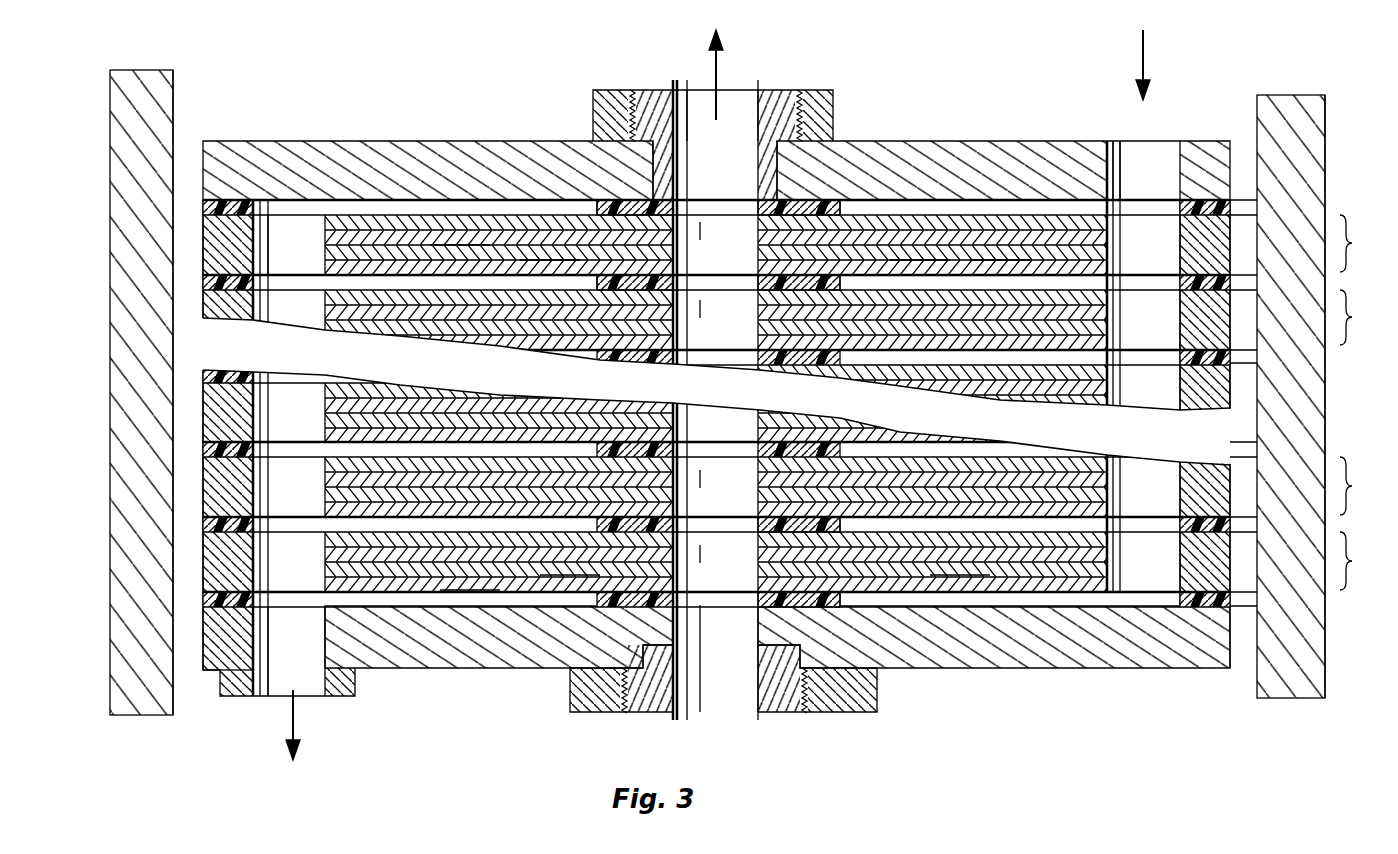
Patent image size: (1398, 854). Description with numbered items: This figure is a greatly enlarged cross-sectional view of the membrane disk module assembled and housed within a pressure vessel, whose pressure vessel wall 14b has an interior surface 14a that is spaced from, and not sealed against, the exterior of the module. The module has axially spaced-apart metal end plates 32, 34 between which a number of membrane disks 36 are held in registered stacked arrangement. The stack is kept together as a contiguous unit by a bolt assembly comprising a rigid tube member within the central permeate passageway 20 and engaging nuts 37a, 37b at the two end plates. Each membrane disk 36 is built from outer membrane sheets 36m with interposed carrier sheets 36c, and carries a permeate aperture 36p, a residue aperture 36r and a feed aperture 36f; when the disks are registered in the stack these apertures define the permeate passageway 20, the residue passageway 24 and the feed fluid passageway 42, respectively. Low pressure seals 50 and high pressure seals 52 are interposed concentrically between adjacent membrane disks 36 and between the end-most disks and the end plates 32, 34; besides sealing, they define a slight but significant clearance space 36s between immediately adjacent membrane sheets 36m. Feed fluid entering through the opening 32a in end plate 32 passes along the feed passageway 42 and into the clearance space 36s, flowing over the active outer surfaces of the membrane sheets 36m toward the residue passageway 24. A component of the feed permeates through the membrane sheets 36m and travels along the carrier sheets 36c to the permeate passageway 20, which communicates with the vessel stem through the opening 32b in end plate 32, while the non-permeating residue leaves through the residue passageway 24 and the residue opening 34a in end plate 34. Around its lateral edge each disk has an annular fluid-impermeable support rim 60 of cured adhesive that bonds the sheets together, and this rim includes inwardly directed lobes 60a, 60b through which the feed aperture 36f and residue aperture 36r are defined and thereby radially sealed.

The interior surface 14a is at (183, 700).
The pressure vessel wall 14b is at (150, 710).
The permeate fluid passageway 20 is at (688, 208).
The residue fluid passageway 24 is at (289, 210).
The end plate 32 is at (366, 185).
The opening 32a is at (1172, 152).
The opening 32b is at (737, 135).
The end plate 34 is at (1123, 650).
The residue opening 34a is at (318, 653).
The membrane disk 36 is at (799, 403).
The carrier sheet 36c is at (545, 250).
The feed aperture 36f is at (1160, 258).
The membrane sheet 36m is at (1003, 255).
The permeate aperture 36p is at (745, 258).
The residue aperture 36r is at (310, 258).
The clearance space 36s is at (460, 248).
The nut 37a is at (833, 100).
The nut 37b is at (592, 740).
The feed fluid passageway 42 is at (1128, 206).
The low pressure seal 50 is at (1232, 208).
The high pressure seal 52 is at (833, 240).
The support rim 60 is at (241, 258).
The lobe 60a is at (1102, 258).
The lobe 60b is at (398, 258).